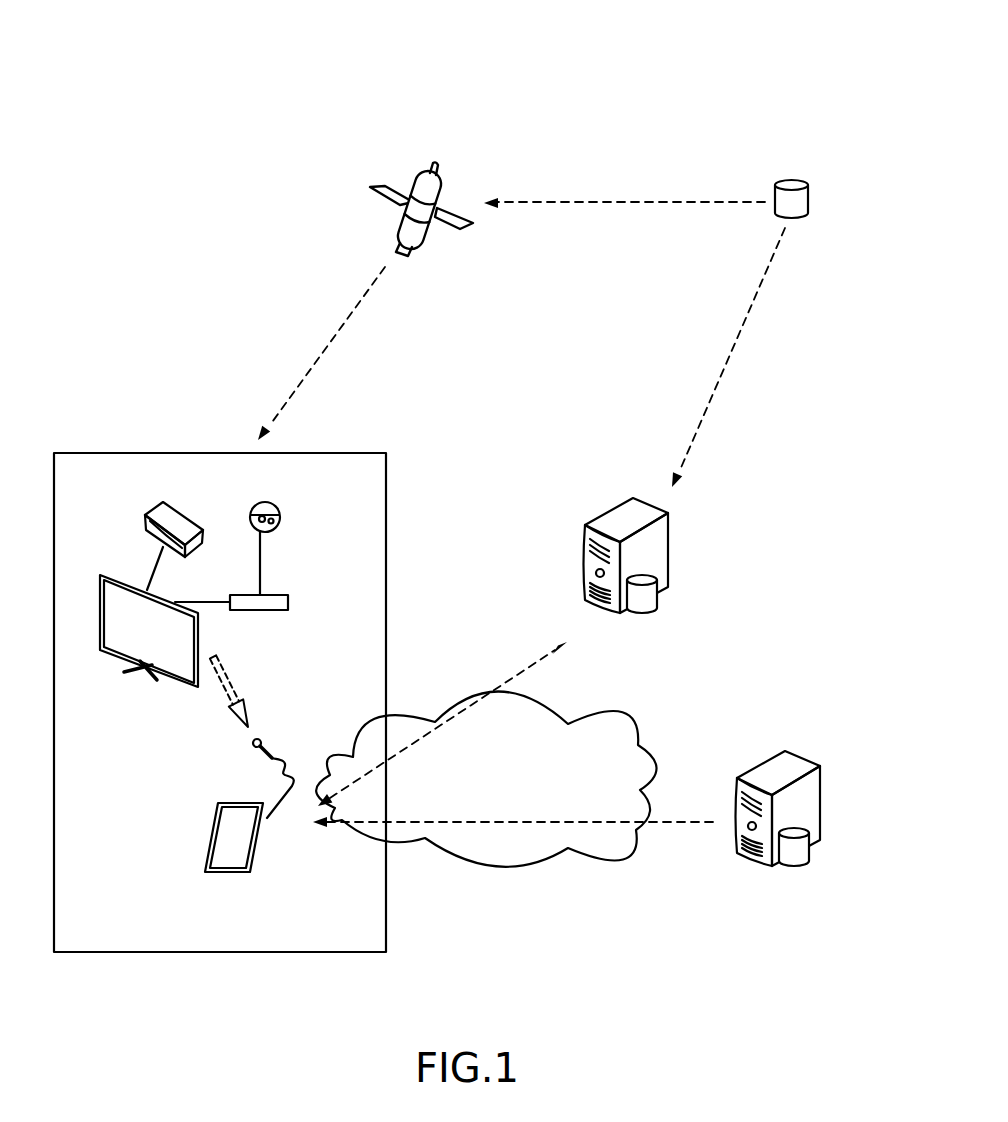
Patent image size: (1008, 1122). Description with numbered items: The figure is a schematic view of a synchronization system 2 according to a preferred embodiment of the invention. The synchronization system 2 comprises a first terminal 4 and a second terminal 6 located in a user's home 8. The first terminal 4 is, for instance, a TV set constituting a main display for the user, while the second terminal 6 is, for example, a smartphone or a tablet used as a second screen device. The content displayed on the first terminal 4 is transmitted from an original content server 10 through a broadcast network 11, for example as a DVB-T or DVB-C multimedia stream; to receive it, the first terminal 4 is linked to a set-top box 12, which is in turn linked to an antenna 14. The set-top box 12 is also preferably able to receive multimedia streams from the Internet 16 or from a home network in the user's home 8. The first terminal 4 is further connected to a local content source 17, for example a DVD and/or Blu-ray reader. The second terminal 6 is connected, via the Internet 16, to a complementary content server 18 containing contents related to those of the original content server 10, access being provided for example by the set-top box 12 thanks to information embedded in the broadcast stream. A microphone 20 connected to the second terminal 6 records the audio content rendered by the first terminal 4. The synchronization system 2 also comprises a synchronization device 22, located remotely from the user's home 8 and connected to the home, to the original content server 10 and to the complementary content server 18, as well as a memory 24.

The synchronization system 2 is at (743, 94).
The first terminal 4 is at (132, 638).
The second terminal 6 is at (213, 840).
The user's home 8 is at (238, 491).
The original content server 10 is at (797, 210).
The broadcast network 11 is at (400, 207).
The set-top box 12 is at (288, 602).
The antenna 14 is at (280, 522).
The Internet 16 is at (507, 782).
The local content source 17 is at (150, 504).
The complementary content server 18 is at (807, 803).
The microphone 20 is at (263, 741).
The synchronization device 22 is at (657, 547).
The memory 24 is at (648, 603).